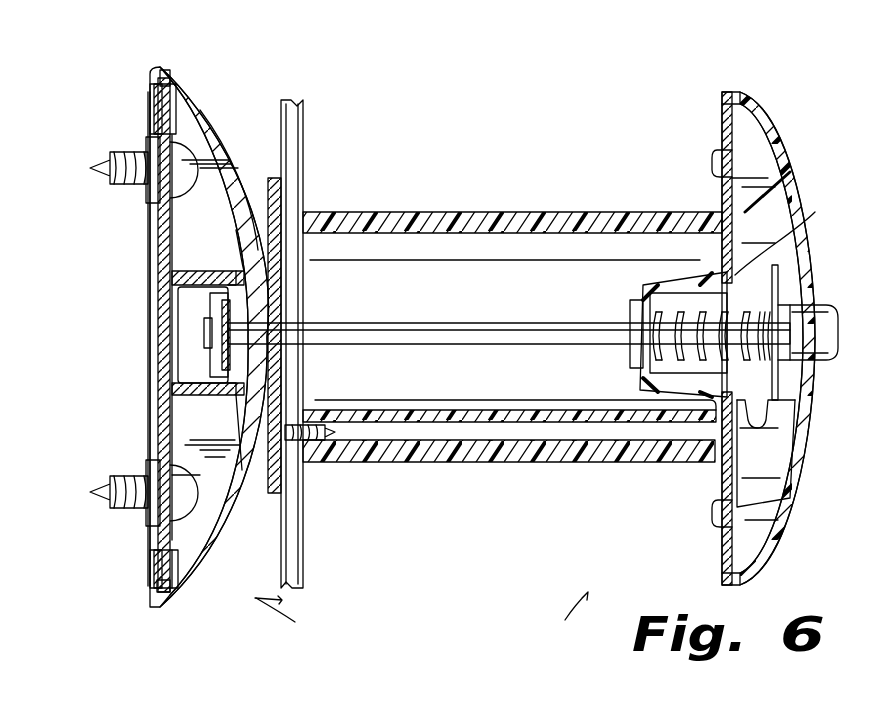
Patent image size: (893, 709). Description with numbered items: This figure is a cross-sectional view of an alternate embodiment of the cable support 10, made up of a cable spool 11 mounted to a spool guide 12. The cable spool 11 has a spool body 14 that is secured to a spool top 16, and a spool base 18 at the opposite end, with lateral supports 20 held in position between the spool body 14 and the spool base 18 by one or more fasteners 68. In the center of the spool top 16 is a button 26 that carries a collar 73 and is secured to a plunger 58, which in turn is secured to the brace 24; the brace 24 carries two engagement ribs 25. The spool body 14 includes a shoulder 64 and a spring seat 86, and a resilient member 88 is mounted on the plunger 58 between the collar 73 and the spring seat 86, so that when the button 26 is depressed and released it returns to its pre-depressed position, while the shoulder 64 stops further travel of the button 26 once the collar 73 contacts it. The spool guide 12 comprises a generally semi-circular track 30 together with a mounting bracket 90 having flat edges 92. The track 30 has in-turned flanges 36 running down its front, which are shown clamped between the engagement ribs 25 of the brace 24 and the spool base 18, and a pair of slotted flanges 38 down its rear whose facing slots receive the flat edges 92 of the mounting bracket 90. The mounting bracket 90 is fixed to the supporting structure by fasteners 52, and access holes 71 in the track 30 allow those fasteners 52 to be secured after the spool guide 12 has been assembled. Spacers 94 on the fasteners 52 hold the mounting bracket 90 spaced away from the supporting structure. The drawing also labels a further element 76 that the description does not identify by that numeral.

The cable support 10 is at (600, 123).
The cable spool 11 is at (564, 614).
The spool guide 12 is at (284, 621).
The spool body 14 is at (418, 212).
The spool top 16 is at (790, 150).
The spool base 18 is at (270, 493).
The lateral supports 20 is at (294, 142).
The brace 24 is at (200, 360).
The engagement ribs 25 is at (212, 271).
The button 26 is at (830, 308).
The track 30 is at (210, 604).
The in-turned flanges 36 is at (240, 271).
The slotted flanges 38 is at (152, 110).
The fasteners 52 is at (104, 160).
The plunger 58 is at (445, 325).
The shoulder 64 is at (830, 225).
The fasteners 68 is at (325, 440).
The access holes 71 is at (236, 160).
The collar 73 is at (766, 438).
The retaining clip 76 is at (722, 168).
The spring seat 86 is at (655, 300).
The resilient member 88 is at (690, 285).
The mounting bracket 90 is at (158, 300).
The flat edges 92 is at (160, 90).
The spacers 94 is at (148, 192).